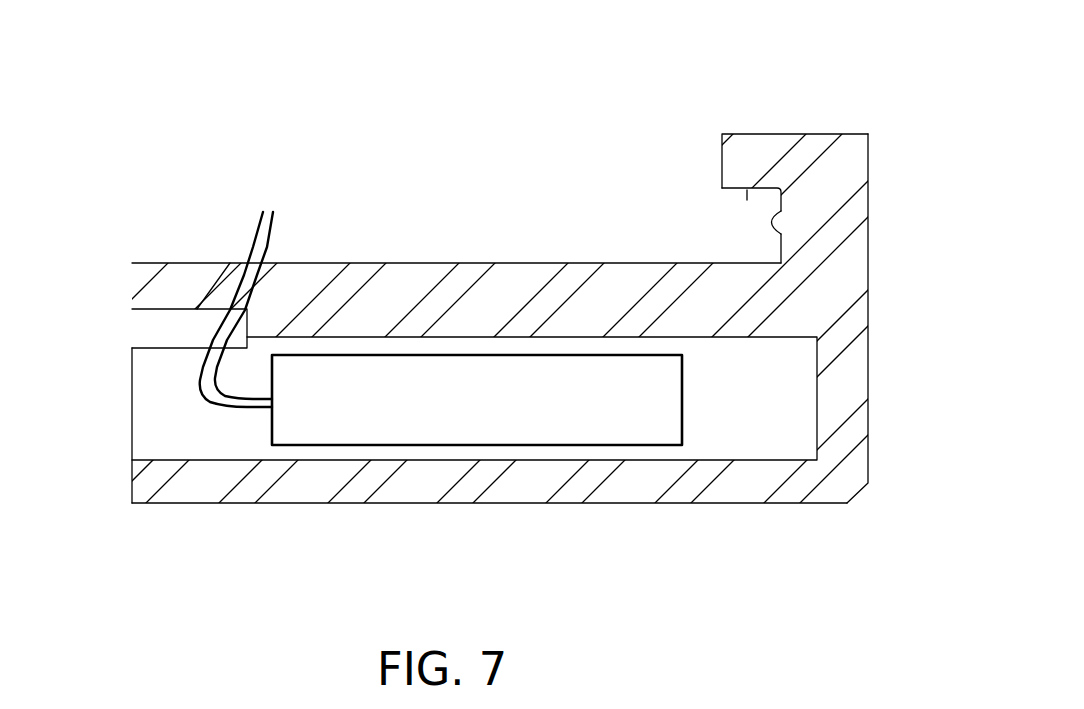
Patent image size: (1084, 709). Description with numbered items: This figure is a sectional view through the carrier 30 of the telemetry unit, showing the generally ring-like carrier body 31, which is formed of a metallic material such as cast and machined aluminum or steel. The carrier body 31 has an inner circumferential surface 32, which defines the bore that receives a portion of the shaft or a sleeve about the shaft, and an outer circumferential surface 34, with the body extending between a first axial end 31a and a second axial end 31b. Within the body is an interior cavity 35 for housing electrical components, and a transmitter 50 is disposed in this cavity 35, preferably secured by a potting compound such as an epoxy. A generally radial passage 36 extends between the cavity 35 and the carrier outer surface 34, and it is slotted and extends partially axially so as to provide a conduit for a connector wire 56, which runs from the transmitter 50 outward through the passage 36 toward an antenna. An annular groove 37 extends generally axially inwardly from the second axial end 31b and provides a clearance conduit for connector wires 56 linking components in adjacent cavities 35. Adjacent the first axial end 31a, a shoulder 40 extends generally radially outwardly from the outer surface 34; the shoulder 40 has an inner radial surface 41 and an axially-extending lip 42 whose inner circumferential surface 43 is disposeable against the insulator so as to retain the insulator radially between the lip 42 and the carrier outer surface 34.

The carrier 30 is at (348, 165).
The carrier body 31 is at (869, 318).
The carrier first axial end 31a is at (868, 380).
The carrier second axial end 31b is at (132, 412).
The inner circumferential surface 32 is at (597, 503).
The outer circumferential surface 34 is at (508, 262).
The interior cavity 35 is at (208, 448).
The radial passage 36 is at (258, 286).
The annular groove 37 is at (163, 310).
The shoulder 40 is at (860, 177).
The inner radial surface 41 is at (784, 213).
The lip 42 is at (762, 145).
The lip inner circumferential surface 43 is at (747, 200).
The transmitter 50 is at (440, 450).
The connector wire 56 is at (263, 234).